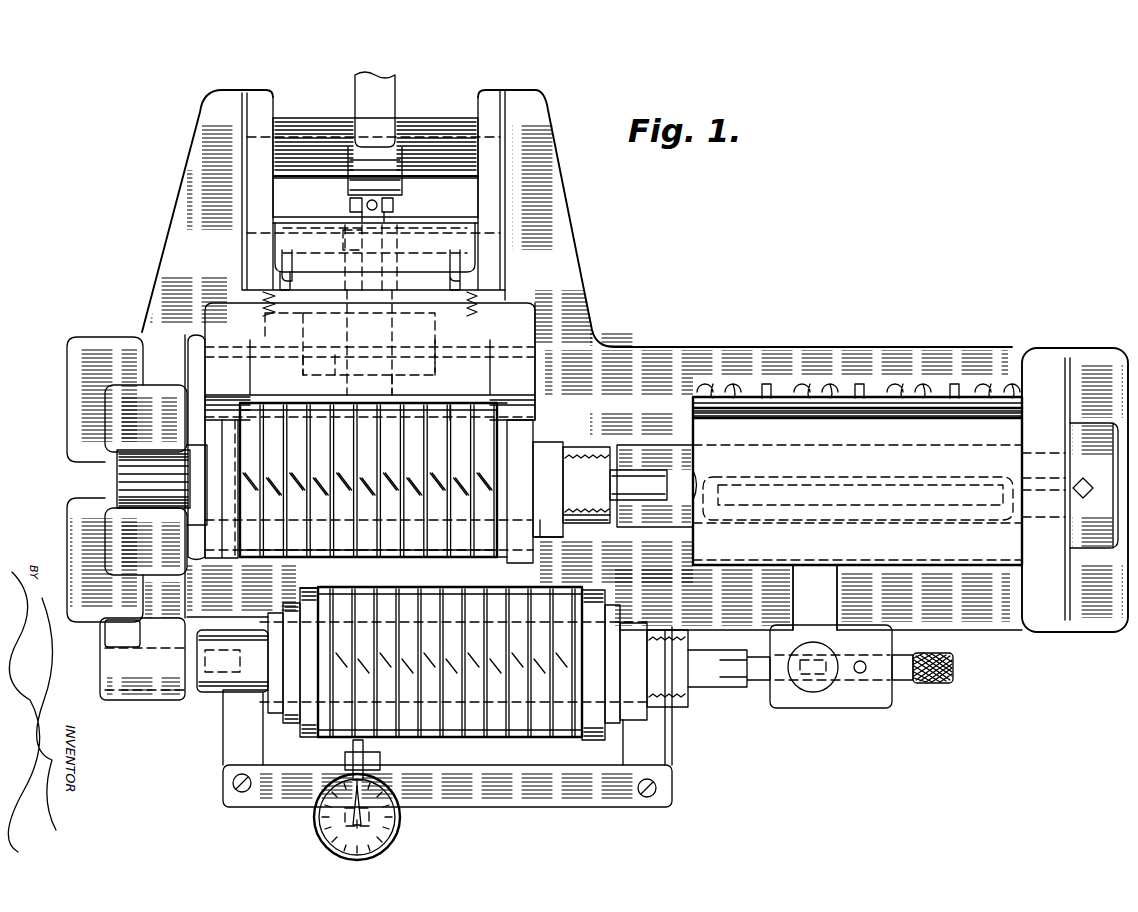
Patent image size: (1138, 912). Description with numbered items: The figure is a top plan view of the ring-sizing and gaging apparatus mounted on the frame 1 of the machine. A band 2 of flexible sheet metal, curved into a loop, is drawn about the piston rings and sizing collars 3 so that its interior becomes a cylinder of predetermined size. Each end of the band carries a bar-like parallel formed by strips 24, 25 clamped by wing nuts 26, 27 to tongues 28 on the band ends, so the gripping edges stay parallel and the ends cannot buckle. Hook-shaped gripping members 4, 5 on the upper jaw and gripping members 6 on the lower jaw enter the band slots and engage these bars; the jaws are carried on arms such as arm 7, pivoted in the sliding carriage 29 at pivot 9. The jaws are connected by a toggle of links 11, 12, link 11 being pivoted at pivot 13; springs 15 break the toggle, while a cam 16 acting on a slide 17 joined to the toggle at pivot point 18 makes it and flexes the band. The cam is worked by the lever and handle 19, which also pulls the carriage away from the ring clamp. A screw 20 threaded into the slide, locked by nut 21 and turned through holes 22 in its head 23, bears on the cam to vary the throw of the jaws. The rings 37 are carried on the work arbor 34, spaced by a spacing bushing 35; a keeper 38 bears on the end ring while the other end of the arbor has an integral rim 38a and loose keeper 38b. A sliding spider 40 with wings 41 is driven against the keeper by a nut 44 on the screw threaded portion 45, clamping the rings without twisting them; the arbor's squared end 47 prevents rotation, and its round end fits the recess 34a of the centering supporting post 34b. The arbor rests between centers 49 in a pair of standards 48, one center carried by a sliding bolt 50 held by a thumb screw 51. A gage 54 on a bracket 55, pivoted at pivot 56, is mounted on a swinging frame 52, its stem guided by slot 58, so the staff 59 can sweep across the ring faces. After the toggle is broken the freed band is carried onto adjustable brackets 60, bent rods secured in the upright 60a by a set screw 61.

The frame 1 is at (638, 357).
The band 2 is at (890, 547).
The sizing collar 3 is at (525, 558).
The gripping member 4 is at (238, 387).
The gripping member 5 is at (517, 382).
The gripping members 6 is at (395, 397).
The arm 7 is at (522, 318).
The pivot 9 is at (262, 255).
The link 11 is at (308, 375).
The link 12 is at (345, 378).
The pivot 13 is at (216, 347).
The springs 15 is at (475, 305).
The cam 16 is at (398, 194).
The slide 17 is at (446, 400).
The pivot point 18 is at (297, 318).
The lever and handle 19 is at (382, 112).
The screw 20 is at (355, 243).
The nut 21 is at (346, 218).
The holes 22 is at (356, 205).
The head 23 is at (393, 208).
The strip 24 is at (893, 417).
The strip 25 is at (820, 405).
The wing nuts 26 is at (962, 378).
The wing nuts 27 is at (893, 378).
The tongues 28 is at (967, 408).
The sliding carriage 29 is at (262, 105).
The work arbor 34 is at (130, 472).
The recess 34a is at (695, 492).
The centering supporting post 34b is at (673, 457).
The spacing bushing 35 is at (450, 420).
The rings 37 is at (497, 437).
The keeper 38 is at (508, 553).
The integral rim 38a is at (188, 427).
The loose keeper 38b is at (230, 430).
The sliding spider 40 is at (560, 512).
The wings 41 is at (548, 527).
The nut 44 is at (597, 445).
The screw threaded portion 45 is at (608, 528).
The squared end 47 is at (113, 508).
The standards 48 is at (813, 582).
The centers 49 is at (763, 677).
The sliding bolt 50 is at (895, 680).
The thumb screw 51 is at (807, 647).
The swinging frame 52 is at (660, 742).
The gage 54 is at (398, 838).
The bracket 55 is at (343, 827).
The pivot 56 is at (345, 812).
The slot 58 is at (640, 803).
The staff 59 is at (352, 747).
The adjustable brackets 60 is at (737, 478).
The upright 60a is at (1053, 596).
The set screw 61 is at (1088, 483).